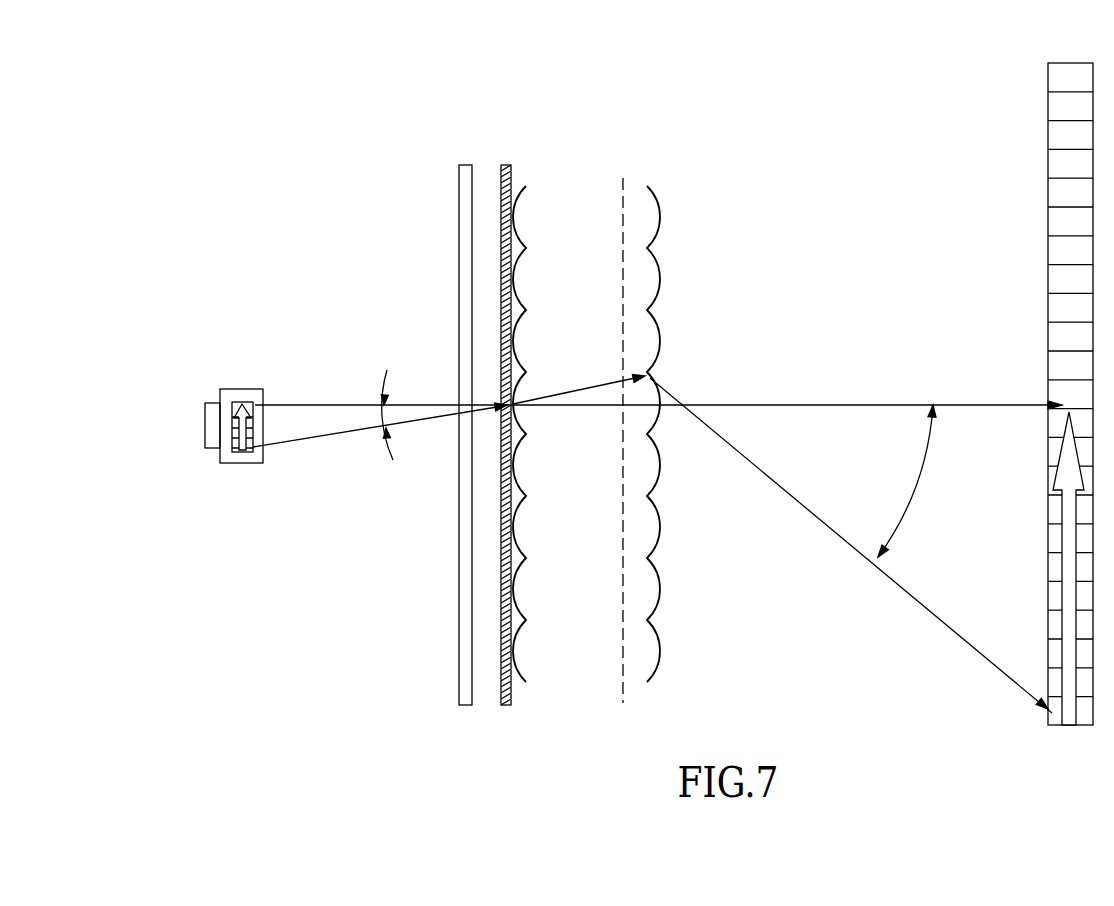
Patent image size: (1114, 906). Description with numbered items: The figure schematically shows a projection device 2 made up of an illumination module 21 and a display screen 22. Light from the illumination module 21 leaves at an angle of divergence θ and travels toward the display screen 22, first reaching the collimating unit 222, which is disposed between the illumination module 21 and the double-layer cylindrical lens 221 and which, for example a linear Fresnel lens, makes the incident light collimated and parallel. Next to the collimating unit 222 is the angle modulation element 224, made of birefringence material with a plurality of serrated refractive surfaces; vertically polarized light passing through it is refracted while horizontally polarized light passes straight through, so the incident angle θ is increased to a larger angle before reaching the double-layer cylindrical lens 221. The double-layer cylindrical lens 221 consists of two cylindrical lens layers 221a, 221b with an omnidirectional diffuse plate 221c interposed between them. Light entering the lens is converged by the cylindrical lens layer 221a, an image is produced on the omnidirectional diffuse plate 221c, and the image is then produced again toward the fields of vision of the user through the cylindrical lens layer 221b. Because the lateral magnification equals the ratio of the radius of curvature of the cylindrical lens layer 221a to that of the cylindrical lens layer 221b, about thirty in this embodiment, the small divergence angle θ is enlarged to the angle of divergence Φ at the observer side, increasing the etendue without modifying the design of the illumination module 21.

The projection device 2 is at (212, 82).
The illumination module 21 is at (242, 389).
The display screen 22 is at (647, 53).
The double-layer cylindrical lens 221 is at (718, 107).
The cylindrical lens layer 221a is at (520, 193).
The cylindrical lens layer 221b is at (660, 211).
The omnidirectional diffuse plate 221c is at (623, 180).
The collimating unit 222 is at (463, 167).
The angle modulation element 224 is at (506, 167).